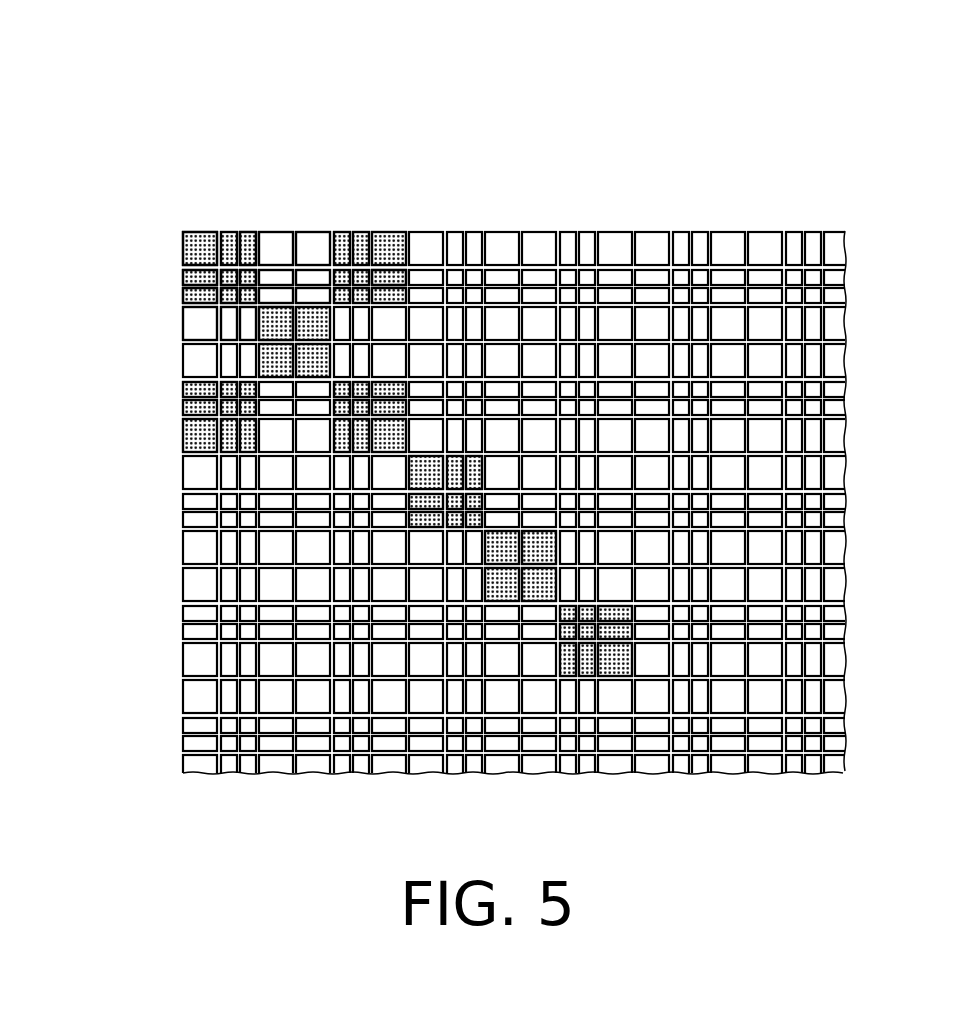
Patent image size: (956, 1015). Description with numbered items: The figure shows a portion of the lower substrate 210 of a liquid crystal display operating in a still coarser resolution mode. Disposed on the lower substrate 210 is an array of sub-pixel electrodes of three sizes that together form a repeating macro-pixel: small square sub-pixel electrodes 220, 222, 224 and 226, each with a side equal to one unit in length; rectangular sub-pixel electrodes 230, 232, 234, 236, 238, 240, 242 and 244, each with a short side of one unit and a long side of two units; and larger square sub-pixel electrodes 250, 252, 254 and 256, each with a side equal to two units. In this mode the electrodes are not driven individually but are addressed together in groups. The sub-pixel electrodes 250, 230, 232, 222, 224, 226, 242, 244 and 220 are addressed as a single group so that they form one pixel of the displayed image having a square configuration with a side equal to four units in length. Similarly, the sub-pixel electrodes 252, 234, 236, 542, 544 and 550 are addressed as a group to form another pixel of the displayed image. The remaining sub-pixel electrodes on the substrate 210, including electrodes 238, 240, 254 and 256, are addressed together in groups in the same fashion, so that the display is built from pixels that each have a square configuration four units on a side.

The lower substrate 210 is at (693, 182).
The sub-pixel electrode 220 is at (229, 277).
The sub-pixel electrode 222 is at (275, 242).
The sub-pixel electrode 224 is at (200, 330).
The sub-pixel electrode 226 is at (196, 273).
The sub-pixel electrode 230 is at (246, 240).
The sub-pixel electrode 232 is at (249, 277).
The sub-pixel electrode 234 is at (312, 242).
The sub-pixel electrode 236 is at (280, 293).
The sub-pixel electrode 238 is at (248, 332).
The sub-pixel electrode 240 is at (228, 332).
The sub-pixel electrode 242 is at (228, 296).
The sub-pixel electrode 244 is at (196, 296).
The sub-pixel electrode 250 is at (198, 237).
The sub-pixel electrode 252 is at (283, 277).
The sub-pixel electrode 254 is at (277, 327).
The sub-pixel electrode 256 is at (252, 292).
The sub-pixel electrode 542 is at (385, 278).
The sub-pixel electrode 544 is at (325, 296).
The sub-pixel electrode 550 is at (320, 277).